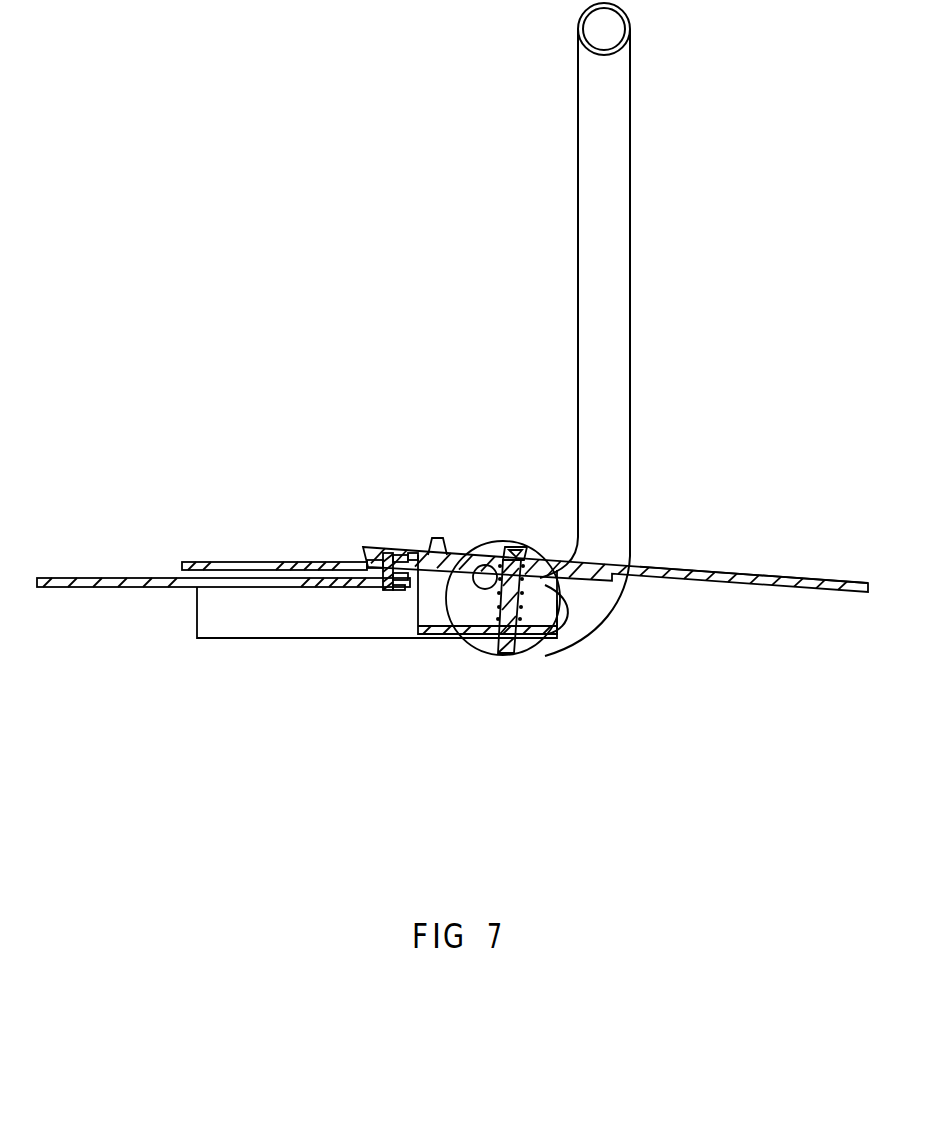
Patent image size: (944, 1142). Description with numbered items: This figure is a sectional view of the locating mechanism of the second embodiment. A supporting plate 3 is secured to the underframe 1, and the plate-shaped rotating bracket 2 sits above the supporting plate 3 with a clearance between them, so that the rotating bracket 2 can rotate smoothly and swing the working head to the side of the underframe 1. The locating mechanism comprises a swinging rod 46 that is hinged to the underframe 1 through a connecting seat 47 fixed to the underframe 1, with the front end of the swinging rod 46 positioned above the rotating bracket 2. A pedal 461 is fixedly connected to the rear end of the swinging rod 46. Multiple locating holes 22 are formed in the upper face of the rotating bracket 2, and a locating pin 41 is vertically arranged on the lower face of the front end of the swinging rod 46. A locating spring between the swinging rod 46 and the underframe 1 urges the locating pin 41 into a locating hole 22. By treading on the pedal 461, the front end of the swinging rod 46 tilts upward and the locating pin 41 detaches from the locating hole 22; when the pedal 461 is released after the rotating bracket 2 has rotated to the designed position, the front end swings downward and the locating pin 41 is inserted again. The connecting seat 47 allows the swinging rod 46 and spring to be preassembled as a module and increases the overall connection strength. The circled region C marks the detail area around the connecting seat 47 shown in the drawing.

The underframe 1 is at (307, 612).
The rotating bracket 2 is at (305, 562).
The locating hole 22 is at (360, 554).
The supporting plate 3 is at (127, 587).
The locating pin 41 is at (380, 570).
The swinging rod 46 is at (414, 557).
The pedal 461 is at (745, 577).
The connecting seat 47 is at (430, 608).
The detail region with screw C is at (528, 650).